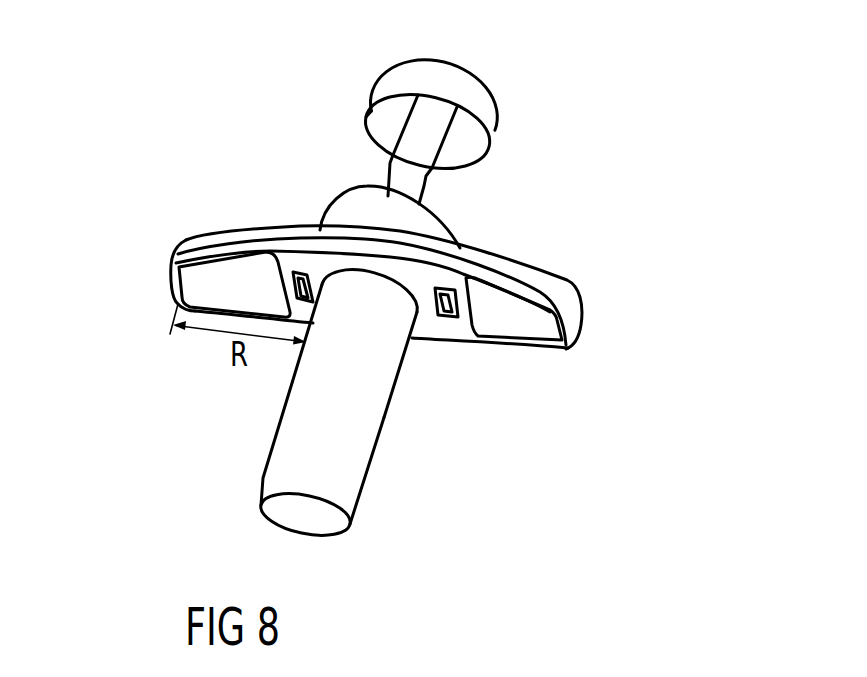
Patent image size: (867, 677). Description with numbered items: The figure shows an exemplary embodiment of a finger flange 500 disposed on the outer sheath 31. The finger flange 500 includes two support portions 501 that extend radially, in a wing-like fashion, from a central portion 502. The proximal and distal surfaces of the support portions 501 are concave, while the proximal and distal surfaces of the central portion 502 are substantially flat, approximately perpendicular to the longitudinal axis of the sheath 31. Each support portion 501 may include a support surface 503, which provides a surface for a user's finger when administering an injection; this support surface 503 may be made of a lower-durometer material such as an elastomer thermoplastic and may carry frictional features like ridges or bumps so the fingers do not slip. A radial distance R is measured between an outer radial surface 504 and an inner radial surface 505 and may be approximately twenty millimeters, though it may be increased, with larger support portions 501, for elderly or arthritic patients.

The finger flange 500 is at (523, 98).
The support portion 501 is at (195, 242).
The central portion 502 is at (342, 220).
The support surface 503 is at (207, 285).
The outer radial surface 504 is at (173, 262).
The inner radial surface 505 is at (307, 342).
The outer sheath 31 is at (373, 474).